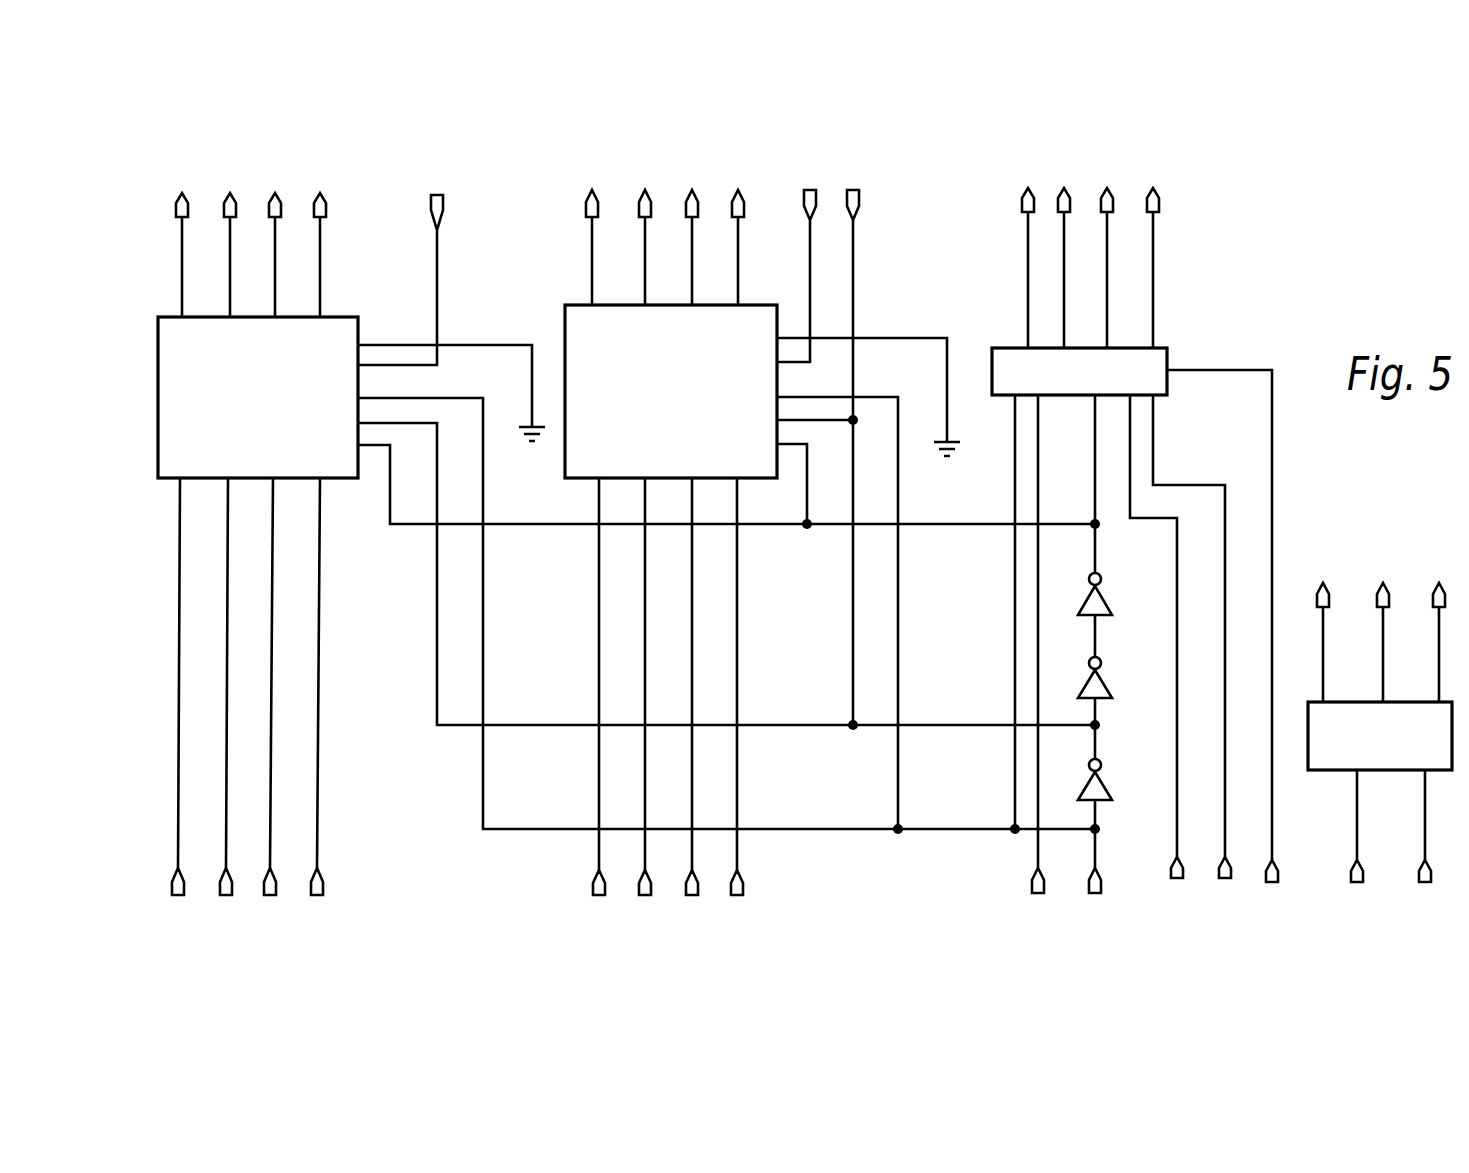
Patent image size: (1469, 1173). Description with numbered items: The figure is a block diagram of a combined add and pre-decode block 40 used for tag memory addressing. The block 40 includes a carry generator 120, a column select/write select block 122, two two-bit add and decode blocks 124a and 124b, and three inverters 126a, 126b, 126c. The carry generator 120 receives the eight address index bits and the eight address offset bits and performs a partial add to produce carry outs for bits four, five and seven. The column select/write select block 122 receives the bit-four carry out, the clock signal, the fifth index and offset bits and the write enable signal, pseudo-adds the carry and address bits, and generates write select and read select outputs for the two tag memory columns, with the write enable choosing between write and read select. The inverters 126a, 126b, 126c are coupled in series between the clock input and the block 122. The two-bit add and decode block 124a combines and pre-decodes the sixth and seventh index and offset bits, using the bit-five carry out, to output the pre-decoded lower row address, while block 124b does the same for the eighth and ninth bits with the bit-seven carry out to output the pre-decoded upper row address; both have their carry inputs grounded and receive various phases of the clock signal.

The combined add and pre-decode block 40 is at (1232, 260).
The carry generator 120 is at (1324, 772).
The column select/write select block 122 is at (1157, 348).
The two-bit add and decode block 124a is at (565, 345).
The two-bit add and decode block 124b is at (343, 479).
The inverter 126a is at (1103, 596).
The inverter 126b is at (1103, 680).
The inverter 126c is at (1103, 782).